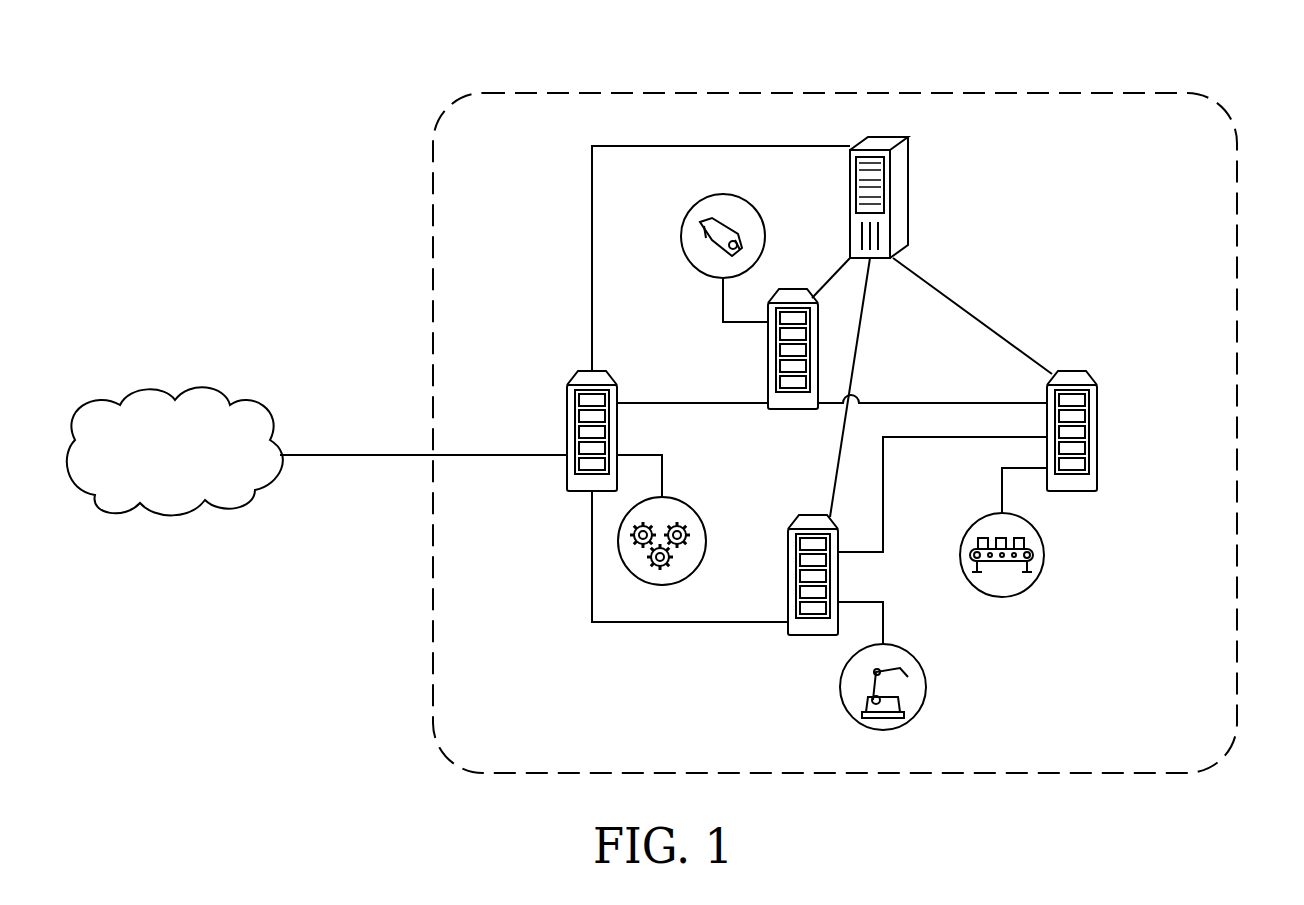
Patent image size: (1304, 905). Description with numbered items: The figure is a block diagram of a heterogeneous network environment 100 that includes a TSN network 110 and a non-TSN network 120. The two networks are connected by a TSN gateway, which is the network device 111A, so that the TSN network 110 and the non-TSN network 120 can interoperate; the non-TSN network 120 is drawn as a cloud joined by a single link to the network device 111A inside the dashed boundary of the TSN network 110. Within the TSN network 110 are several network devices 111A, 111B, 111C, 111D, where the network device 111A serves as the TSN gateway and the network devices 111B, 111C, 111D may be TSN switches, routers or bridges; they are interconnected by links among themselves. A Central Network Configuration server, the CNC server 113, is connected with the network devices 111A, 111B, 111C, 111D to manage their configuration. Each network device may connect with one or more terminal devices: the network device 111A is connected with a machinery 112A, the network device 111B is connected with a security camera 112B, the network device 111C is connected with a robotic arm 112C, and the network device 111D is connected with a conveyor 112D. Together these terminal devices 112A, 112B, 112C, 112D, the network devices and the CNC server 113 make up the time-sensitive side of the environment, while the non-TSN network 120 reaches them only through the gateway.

The heterogeneous network environment 100 is at (152, 108).
The TSN network 110 is at (836, 93).
The non-TSN network 120 is at (172, 394).
The network device (TSN gateway) 111A is at (567, 409).
The network device 111B is at (768, 360).
The network device 111C is at (840, 578).
The network device 111D is at (1098, 437).
The machinery 112A is at (674, 500).
The security camera 112B is at (725, 195).
The robotic arm 112C is at (900, 648).
The conveyor 112D is at (1045, 553).
The CNC server 113 is at (910, 192).